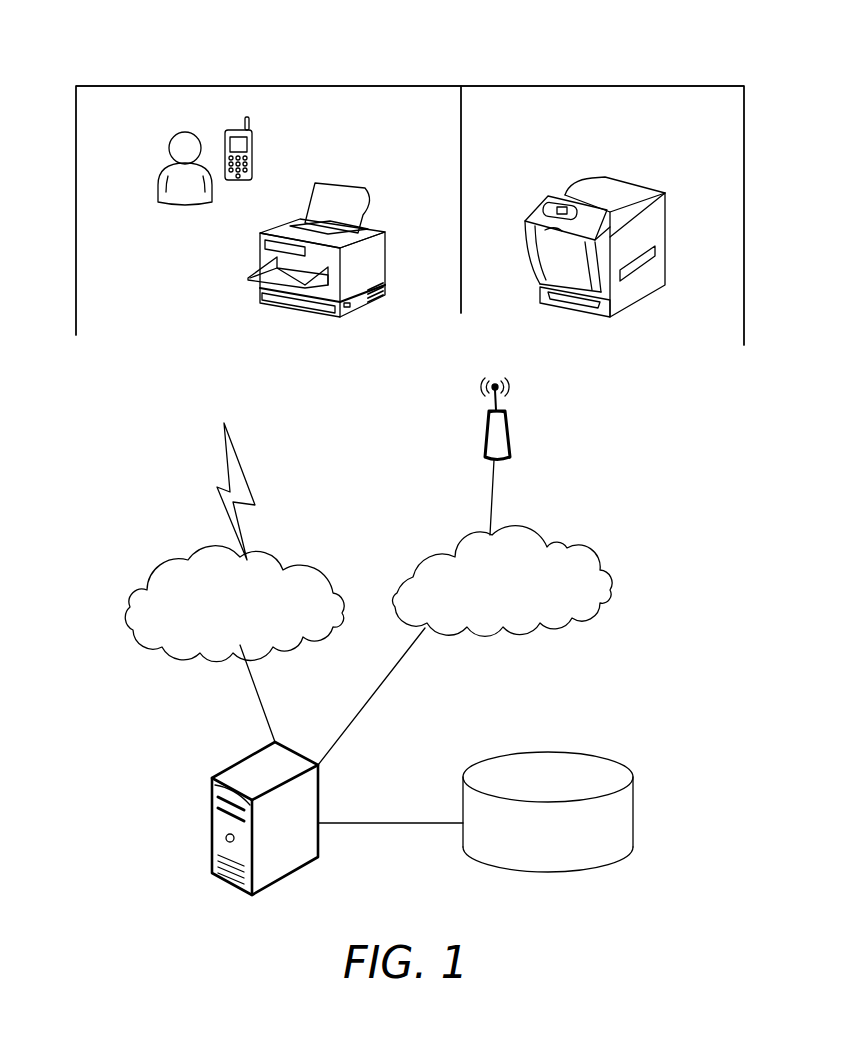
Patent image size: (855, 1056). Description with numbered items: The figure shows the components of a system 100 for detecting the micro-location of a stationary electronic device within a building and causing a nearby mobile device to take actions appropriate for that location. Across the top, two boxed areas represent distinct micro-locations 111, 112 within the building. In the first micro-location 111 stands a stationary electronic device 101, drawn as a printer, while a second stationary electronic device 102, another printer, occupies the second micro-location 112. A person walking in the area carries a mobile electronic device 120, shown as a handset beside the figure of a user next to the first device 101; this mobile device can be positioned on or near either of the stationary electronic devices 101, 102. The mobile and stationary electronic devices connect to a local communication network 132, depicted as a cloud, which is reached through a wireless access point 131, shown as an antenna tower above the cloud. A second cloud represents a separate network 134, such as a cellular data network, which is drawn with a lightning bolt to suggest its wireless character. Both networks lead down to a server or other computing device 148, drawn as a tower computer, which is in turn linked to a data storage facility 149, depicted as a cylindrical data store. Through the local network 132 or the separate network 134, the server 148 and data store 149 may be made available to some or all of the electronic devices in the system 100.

The system 100 is at (163, 59).
The micro-location 111 is at (367, 86).
The micro-location 112 is at (593, 86).
The mobile electronic device 120 is at (255, 138).
The stationary electronic device 101 is at (345, 182).
The stationary electronic device 102 is at (632, 178).
The wireless base station 131 is at (508, 387).
The local communication network 132 is at (567, 548).
The separate network 134 is at (315, 570).
The server or other computing device 148 is at (240, 757).
The data storage facility 149 is at (603, 760).